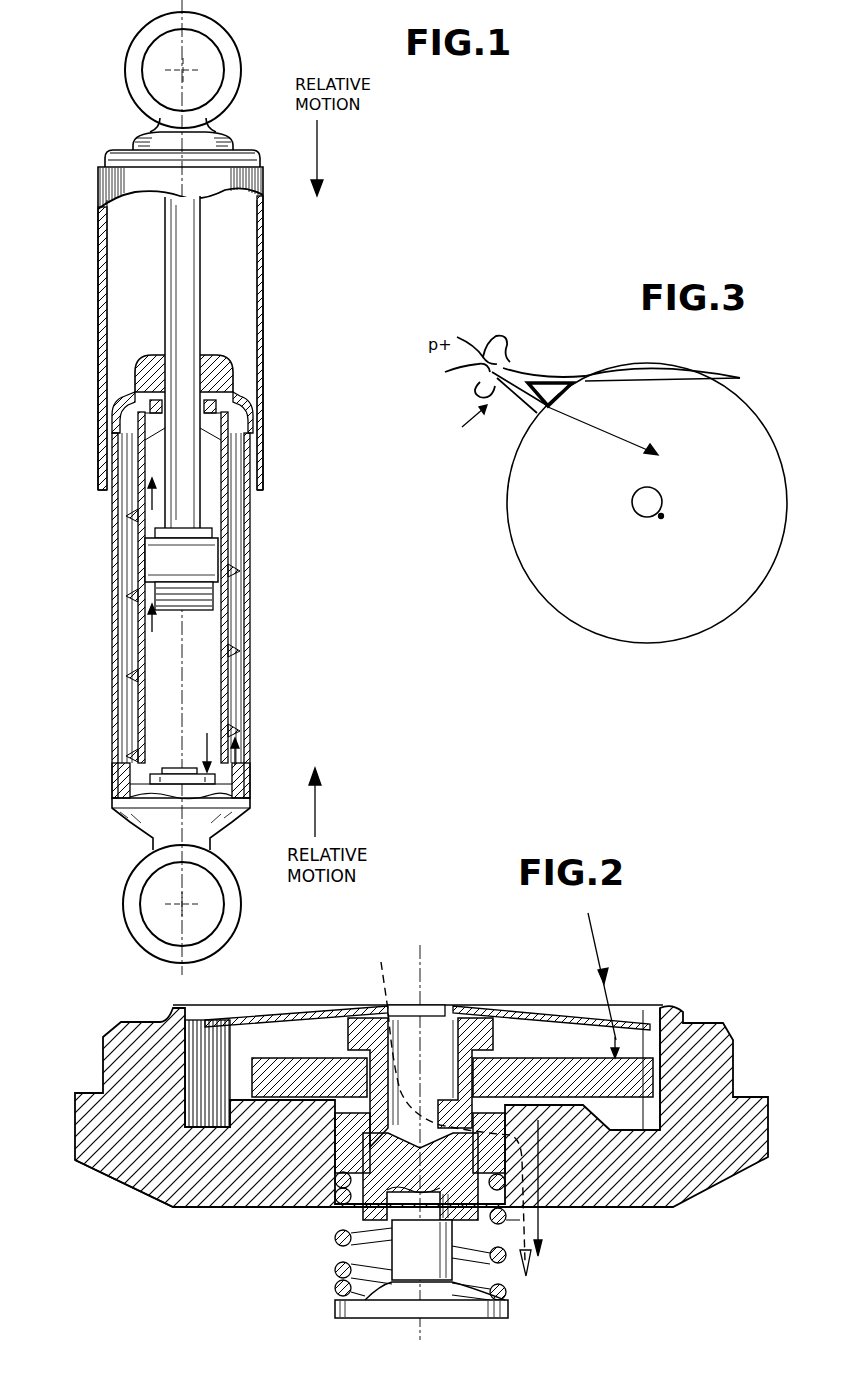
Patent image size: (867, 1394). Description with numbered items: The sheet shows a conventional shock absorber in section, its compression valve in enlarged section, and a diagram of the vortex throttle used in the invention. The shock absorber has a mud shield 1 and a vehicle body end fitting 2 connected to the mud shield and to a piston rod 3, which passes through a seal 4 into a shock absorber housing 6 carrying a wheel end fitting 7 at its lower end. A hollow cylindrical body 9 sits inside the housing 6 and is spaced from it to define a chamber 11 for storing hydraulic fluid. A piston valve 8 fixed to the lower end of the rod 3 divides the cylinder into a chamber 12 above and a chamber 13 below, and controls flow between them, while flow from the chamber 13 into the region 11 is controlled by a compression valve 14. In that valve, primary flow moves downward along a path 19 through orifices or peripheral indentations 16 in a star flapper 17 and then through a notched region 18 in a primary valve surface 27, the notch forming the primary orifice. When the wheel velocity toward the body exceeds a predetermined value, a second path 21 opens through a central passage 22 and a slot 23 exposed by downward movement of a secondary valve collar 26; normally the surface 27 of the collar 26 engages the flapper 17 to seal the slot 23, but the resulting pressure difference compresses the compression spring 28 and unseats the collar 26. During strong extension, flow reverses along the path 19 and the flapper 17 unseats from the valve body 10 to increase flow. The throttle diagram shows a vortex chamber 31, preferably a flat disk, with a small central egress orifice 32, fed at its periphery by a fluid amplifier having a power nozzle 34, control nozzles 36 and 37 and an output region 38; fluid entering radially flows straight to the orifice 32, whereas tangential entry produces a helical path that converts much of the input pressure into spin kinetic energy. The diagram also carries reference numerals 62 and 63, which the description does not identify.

In FIG. 1, the mud shield 1 is at (122, 181).
In FIG. 1, the vehicle body end fitting 2 is at (243, 62).
In FIG. 1, the piston rod 3 is at (203, 282).
In FIG. 1, the seal 4 is at (235, 378).
In FIG. 1, the shock absorber housing 6 is at (247, 535).
In FIG. 1, the wheel end fitting 7 is at (122, 904).
In FIG. 1, the piston valve 8 is at (205, 560).
In FIG. 1, the hollow cylindrical body 9 is at (138, 546).
In FIG. 2, the valve body 10 is at (697, 1173).
In FIG. 1, the chamber for storing shock absorber hydraulic fluid 11 is at (233, 598).
In FIG. 1, the chamber above the valve 12 is at (212, 470).
In FIG. 1, the chamber below the valve 13 is at (200, 680).
In FIG. 1, the compression valve 14 is at (168, 765).
In FIG. 2, the compression valve 14 is at (165, 1207).
In FIG. 2, the orifices or peripheral indentations 16 is at (655, 1052).
In FIG. 2, the star flapper 17 is at (500, 1065).
In FIG. 2, the notched region 18 is at (563, 1098).
In FIG. 2, the primary flow path 19 is at (588, 913).
In FIG. 2, the second path 21 is at (380, 960).
In FIG. 2, the central passage 22 is at (428, 1012).
In FIG. 2, the slot 23 is at (450, 1118).
In FIG. 2, the secondary valve collar 26 is at (355, 1092).
In FIG. 2, the primary valve surface 27 is at (337, 1127).
In FIG. 2, the compression spring 28 is at (336, 1238).
In FIG. 3, the vortex chamber 31 is at (786, 485).
In FIG. 3, the central egress orifice 32 is at (662, 517).
In FIG. 3, the power nozzle 34 is at (477, 372).
In FIG. 3, the control nozzle 36 is at (461, 430).
In FIG. 3, the control nozzle 37 is at (510, 345).
In FIG. 3, the output region 38 is at (558, 404).
In FIG. 3, the passage 62 is at (542, 415).
In FIG. 3, the chamber 63 is at (572, 381).